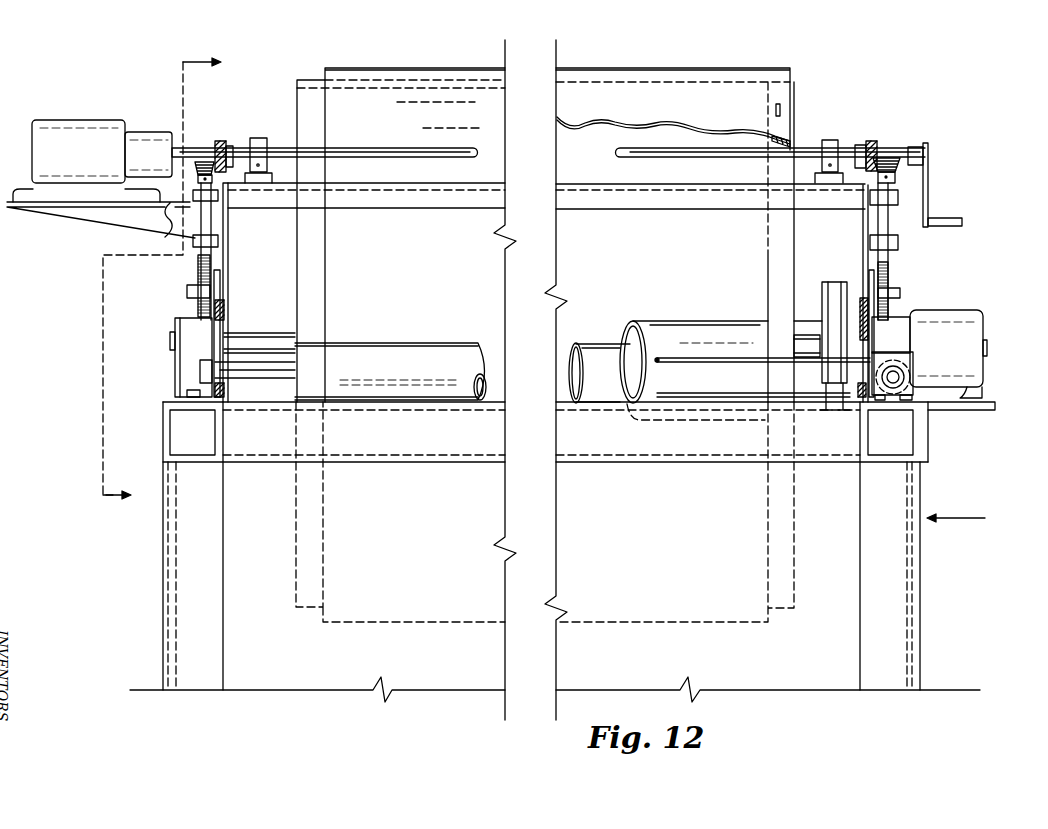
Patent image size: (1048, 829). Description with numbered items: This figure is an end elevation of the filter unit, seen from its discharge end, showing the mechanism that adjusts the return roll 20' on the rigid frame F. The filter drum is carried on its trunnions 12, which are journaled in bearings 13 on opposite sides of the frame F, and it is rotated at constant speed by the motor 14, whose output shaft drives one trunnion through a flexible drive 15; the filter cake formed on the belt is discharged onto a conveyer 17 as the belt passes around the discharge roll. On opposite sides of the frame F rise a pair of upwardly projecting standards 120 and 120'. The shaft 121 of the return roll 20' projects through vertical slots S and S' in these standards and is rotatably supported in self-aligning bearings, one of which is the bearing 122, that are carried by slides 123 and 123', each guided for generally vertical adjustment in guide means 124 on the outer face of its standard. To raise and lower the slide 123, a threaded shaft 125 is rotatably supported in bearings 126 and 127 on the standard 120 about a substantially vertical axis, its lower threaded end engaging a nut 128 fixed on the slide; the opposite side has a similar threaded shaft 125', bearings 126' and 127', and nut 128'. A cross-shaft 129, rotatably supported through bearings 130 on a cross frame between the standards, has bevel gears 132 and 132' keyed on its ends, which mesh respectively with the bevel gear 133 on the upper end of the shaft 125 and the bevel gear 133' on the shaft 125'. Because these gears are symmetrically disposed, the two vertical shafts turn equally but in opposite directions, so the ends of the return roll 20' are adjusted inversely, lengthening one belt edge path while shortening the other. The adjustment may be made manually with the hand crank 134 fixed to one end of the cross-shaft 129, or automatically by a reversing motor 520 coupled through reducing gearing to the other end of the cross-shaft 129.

The trunnions 12 is at (262, 340).
The bearings 13 is at (173, 279).
The motor 14 is at (972, 332).
The flexible drive 15 is at (830, 283).
The conveyer 17 is at (722, 358).
The return roll 20' is at (390, 347).
The standard 120 is at (252, 292).
The standard 120' is at (834, 293).
The shaft 121 is at (373, 183).
The bearing 122 is at (203, 362).
The slide 123 is at (248, 327).
The slide 123' is at (837, 321).
The guide means 124 is at (210, 350).
The threaded shaft 125 is at (161, 290).
The threaded shaft 125' is at (915, 291).
The bearing 126 is at (163, 223).
The bearing 126' is at (925, 202).
The bearing 127 is at (182, 258).
The bearing 127' is at (937, 247).
The nut 128 is at (170, 292).
The nut 128' is at (922, 285).
The cross-shaft 129 is at (447, 150).
The bearings 130 is at (262, 140).
The bevel gear 132 is at (232, 142).
The bevel gear 132' is at (883, 133).
The bevel gear 133 is at (197, 149).
The bevel gear 133' is at (916, 139).
The hand crank 134 is at (929, 177).
The reversing motor 520 is at (102, 151).
The vertical slot S is at (234, 351).
The vertical slot S' is at (866, 367).
The frame F is at (963, 517).